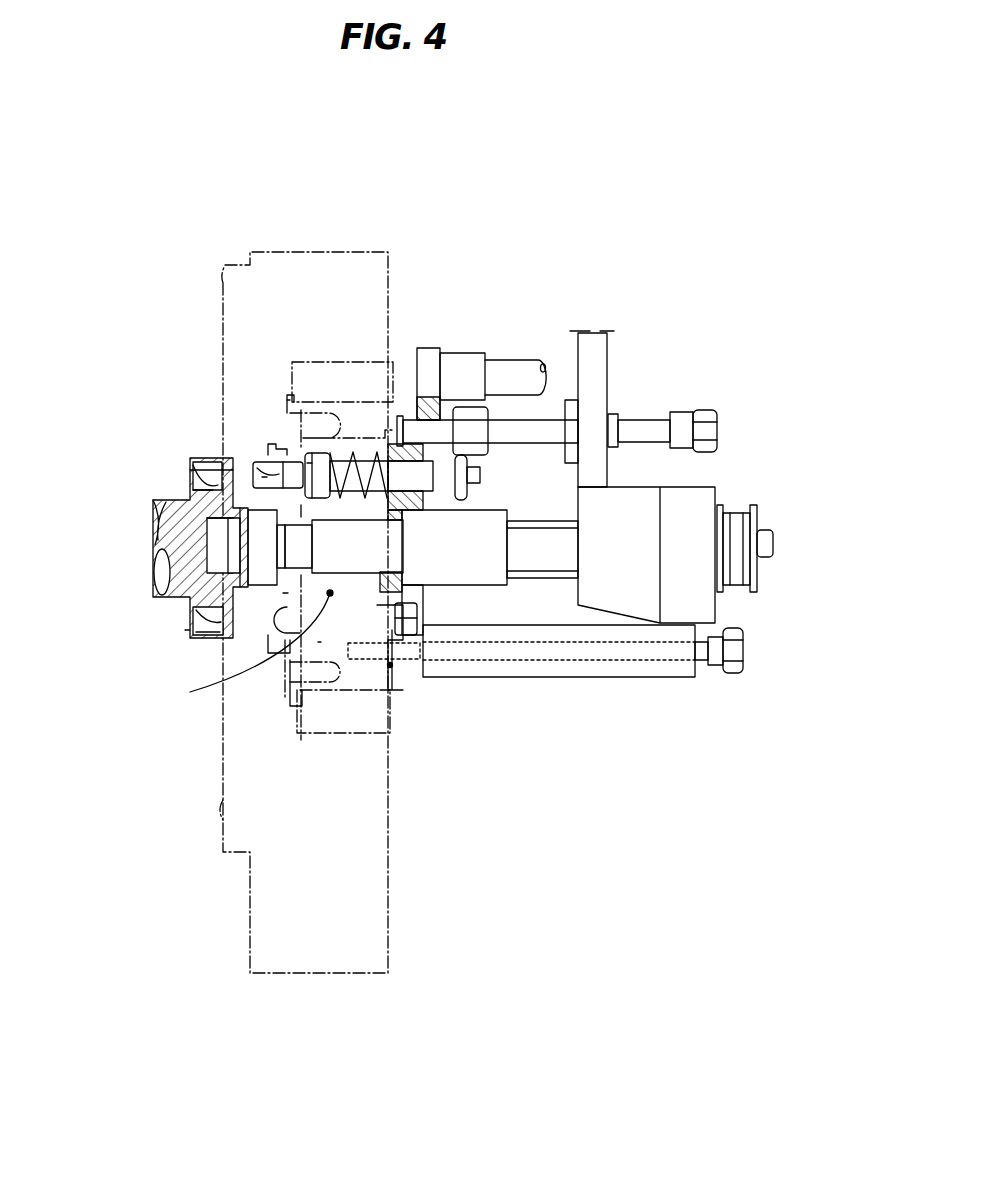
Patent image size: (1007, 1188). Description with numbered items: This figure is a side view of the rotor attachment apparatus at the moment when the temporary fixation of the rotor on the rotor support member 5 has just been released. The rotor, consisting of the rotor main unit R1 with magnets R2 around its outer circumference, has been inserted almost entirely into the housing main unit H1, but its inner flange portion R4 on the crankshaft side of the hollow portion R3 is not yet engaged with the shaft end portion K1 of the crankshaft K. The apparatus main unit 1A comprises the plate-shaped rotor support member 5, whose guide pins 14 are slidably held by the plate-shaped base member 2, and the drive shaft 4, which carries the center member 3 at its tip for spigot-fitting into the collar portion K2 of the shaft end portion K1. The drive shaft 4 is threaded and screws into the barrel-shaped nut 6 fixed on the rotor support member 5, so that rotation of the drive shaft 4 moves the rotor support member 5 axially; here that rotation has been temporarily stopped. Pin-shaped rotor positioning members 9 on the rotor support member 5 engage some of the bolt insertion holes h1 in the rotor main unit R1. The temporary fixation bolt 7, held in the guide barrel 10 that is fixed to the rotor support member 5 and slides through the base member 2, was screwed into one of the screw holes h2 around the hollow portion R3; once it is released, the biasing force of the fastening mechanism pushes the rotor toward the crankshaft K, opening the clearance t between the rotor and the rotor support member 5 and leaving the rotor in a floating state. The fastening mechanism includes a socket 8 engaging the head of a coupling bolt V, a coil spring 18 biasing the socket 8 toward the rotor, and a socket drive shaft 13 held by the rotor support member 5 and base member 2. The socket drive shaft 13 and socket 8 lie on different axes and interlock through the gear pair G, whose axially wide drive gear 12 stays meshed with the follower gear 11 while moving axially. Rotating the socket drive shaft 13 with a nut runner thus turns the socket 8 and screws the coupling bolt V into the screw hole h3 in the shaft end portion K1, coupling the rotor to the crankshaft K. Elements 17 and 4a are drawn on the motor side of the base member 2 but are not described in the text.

The housing main unit H1 is at (213, 266).
The magnets R2 is at (347, 372).
The coil spring 18 is at (352, 468).
The rotor support member 5 is at (433, 338).
The gear pair G is at (632, 231).
The drive gear 12 is at (473, 425).
The follower gear 11 is at (463, 480).
The guide pin 14 is at (503, 370).
The base member 2 is at (620, 352).
The apparatus main unit 1A is at (832, 195).
The socket drive shaft 13 is at (645, 432).
The pulley 17 is at (768, 507).
The rotor main unit R1 is at (278, 398).
The socket 8 is at (313, 462).
The bolt insertion holes h1 is at (257, 463).
The screw hole h3 is at (210, 485).
The coupling bolts V is at (257, 470).
The shaft end portion K1 is at (192, 490).
The collar portion K2 is at (242, 520).
The crankshaft K is at (142, 530).
The center member 3 is at (240, 555).
The inner flange portion R4 is at (187, 628).
The rotor positioning members 9 is at (283, 593).
The hollow portion R3 is at (320, 640).
The screw holes h2 is at (367, 647).
The clearance t is at (390, 665).
The barrel-shaped nut 6 is at (480, 578).
The drive shaft 4 is at (532, 557).
The motor housing 4a is at (703, 602).
The temporary fixation bolt 7 is at (735, 653).
The guide barrel 10 is at (615, 668).